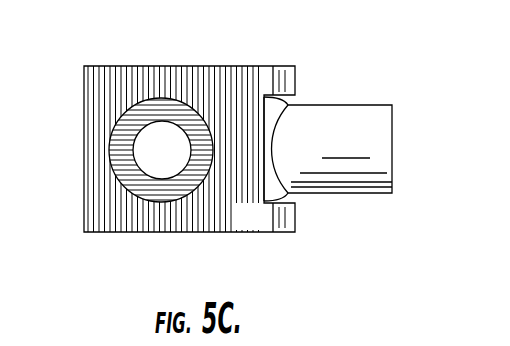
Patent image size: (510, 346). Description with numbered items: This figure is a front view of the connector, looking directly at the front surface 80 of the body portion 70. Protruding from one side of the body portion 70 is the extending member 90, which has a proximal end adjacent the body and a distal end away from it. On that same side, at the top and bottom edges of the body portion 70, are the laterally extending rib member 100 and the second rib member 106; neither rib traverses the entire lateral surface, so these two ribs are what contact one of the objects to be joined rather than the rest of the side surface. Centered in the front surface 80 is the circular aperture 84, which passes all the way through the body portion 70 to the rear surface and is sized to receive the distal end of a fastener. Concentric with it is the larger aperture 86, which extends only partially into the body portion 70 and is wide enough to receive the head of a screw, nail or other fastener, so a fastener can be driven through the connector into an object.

The body portion 70 is at (252, 50).
The front surface 80 is at (257, 226).
The aperture 84 is at (168, 161).
The larger aperture 86 is at (165, 192).
The extending member 90 is at (425, 101).
The rib member 100 is at (335, 95).
The second rib member 106 is at (333, 227).